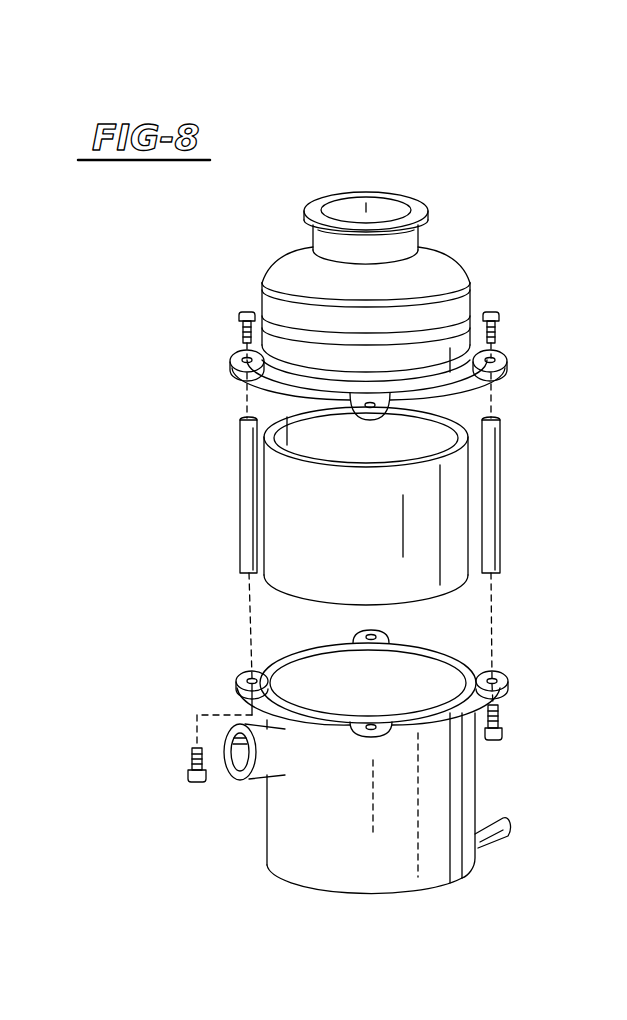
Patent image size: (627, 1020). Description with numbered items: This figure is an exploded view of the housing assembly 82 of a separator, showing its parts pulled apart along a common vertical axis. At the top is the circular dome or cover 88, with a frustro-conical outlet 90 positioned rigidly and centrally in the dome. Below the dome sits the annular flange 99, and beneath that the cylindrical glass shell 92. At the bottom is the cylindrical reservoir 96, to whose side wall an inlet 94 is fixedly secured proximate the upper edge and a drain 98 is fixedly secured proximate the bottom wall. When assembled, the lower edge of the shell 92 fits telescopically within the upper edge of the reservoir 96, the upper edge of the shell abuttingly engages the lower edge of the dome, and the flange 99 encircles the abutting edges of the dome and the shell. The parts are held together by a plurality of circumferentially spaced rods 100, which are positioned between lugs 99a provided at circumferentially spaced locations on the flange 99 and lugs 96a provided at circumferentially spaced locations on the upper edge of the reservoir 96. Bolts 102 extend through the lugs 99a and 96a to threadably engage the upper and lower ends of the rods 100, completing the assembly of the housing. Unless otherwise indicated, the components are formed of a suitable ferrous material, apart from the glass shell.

The housing assembly 82 is at (188, 441).
The circular dome or cover 88 is at (412, 207).
The frustro-conical outlet 90 is at (296, 246).
The cylindrical glass shell 92 is at (384, 535).
The inlet 94 is at (240, 783).
The cylindrical reservoir 96 is at (346, 815).
The lugs 96a is at (506, 688).
The drain 98 is at (495, 822).
The annular flange 99 is at (238, 403).
The lugs 99a is at (496, 373).
The rods 100 is at (240, 520).
The bolts 102 is at (239, 315).